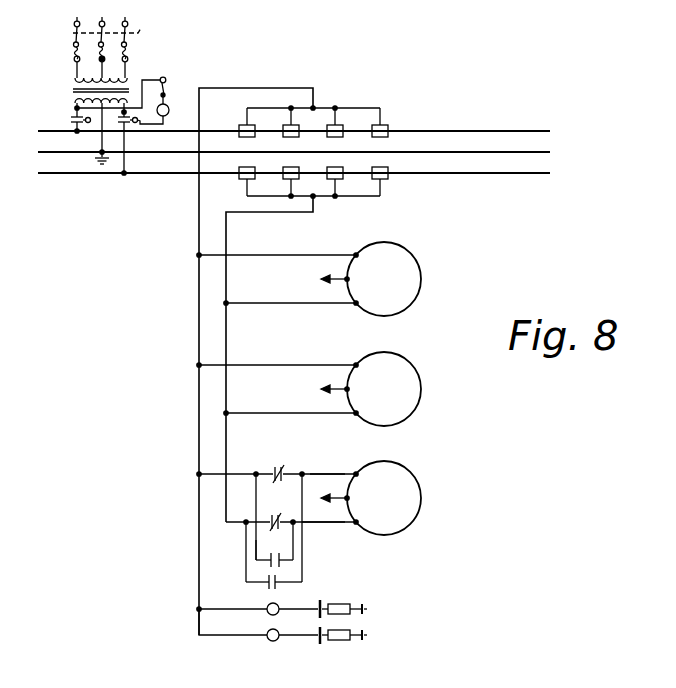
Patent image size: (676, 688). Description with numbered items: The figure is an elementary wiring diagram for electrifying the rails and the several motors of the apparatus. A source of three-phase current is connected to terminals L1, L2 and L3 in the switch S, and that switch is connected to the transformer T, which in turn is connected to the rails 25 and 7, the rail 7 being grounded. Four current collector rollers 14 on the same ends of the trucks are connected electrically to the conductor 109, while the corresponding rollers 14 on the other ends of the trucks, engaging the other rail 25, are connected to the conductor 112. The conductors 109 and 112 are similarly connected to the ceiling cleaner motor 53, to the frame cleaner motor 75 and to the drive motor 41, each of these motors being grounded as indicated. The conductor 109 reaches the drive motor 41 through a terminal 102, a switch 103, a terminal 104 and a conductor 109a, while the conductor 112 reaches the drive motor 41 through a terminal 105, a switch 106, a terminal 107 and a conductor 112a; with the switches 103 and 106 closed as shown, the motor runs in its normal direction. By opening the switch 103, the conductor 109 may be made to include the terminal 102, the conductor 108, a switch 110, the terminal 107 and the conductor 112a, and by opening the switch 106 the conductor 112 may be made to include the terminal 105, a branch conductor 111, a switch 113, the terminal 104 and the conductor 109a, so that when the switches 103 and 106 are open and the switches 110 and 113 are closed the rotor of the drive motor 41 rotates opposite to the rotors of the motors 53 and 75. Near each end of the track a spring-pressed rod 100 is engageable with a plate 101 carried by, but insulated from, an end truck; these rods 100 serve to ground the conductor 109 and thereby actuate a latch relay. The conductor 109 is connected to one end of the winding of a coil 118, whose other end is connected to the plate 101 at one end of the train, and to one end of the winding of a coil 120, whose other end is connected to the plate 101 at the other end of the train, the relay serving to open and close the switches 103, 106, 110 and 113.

The terminal L1 is at (76, 41).
The terminal L2 is at (101, 41).
The terminal L3 is at (124, 41).
The switch S is at (117, 34).
The transformer T is at (98, 126).
The rail 25 is at (495, 132).
The rail 7 is at (541, 153).
The conductor 109 is at (283, 88).
The current collector roller 14 is at (298, 137).
The conductor 112 is at (305, 212).
The ceiling cleaner motor 53 is at (412, 262).
The frame cleaner motor 75 is at (412, 376).
The drive motor 41 is at (414, 487).
The switch 103 is at (279, 467).
The terminal 102 is at (257, 478).
The terminal 104 is at (306, 474).
The conductor 109a is at (345, 474).
The terminal 105 is at (258, 522).
The switch 106 is at (281, 511).
The terminal 107 is at (293, 521).
The conductor 112a is at (345, 524).
The switch 110 is at (281, 550).
The conductor 108 is at (256, 543).
The branch conductor 111 is at (246, 572).
The switch 113 is at (272, 590).
The coil 118 is at (267, 606).
The coil 120 is at (267, 633).
The plate 101 is at (320, 600).
The spring-pressed rod 100 is at (346, 604).